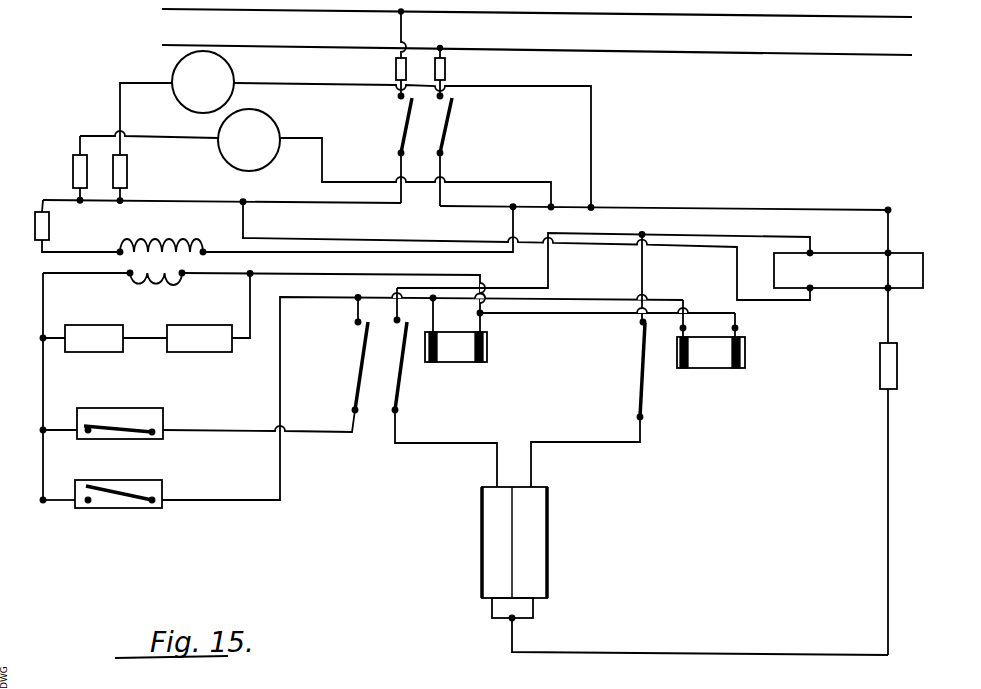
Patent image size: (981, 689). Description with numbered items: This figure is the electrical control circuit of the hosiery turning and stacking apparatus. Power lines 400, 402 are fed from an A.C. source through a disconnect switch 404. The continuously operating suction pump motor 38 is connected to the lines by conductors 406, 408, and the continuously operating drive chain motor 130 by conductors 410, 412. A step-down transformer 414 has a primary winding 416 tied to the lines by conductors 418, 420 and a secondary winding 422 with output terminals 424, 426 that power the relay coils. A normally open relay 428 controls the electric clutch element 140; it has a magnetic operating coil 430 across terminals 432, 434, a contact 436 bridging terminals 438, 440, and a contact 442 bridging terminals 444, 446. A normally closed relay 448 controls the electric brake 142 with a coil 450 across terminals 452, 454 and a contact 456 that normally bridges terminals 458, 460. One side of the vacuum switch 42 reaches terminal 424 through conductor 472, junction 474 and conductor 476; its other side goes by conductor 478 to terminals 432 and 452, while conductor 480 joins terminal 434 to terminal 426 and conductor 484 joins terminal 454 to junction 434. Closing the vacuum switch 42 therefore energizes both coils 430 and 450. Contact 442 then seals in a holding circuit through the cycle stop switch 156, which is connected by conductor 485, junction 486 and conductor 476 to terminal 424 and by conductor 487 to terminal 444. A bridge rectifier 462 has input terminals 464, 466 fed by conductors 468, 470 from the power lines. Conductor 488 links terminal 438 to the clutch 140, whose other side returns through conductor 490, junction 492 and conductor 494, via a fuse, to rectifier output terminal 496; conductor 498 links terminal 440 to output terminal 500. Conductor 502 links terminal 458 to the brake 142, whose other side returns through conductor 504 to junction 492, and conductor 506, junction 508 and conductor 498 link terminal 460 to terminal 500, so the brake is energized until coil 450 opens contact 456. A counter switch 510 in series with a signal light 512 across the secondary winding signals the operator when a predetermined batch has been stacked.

The continuously operating motor 38 is at (232, 62).
The continuously operating motor 130 is at (279, 127).
The conductor 406 is at (118, 112).
The conductor 410 is at (80, 142).
The conductor 412 is at (321, 176).
The disconnect switch 404 is at (448, 139).
The conductor 408 is at (592, 140).
The power line 400 is at (295, 202).
The power line 402 is at (706, 209).
The conductor 418 is at (93, 232).
The primary winding 416 is at (147, 245).
The step-down transformer 414 is at (190, 222).
The conductor 420 is at (235, 236).
The secondary winding 422 is at (140, 290).
The output terminal 424 is at (128, 277).
The output terminal 426 is at (184, 278).
The conductor 480 is at (452, 276).
The signal light 512 is at (116, 318).
The counter switch 510 is at (221, 318).
The conductor 476 is at (42, 410).
The junction 486 is at (41, 431).
The conductor 485 is at (58, 432).
The cycle stop switch 156 is at (153, 434).
The conductor 487 is at (209, 433).
The junction 474 is at (42, 500).
The conductor 472 is at (57, 501).
The vacuum switch 42 is at (105, 508).
The conductor 478 is at (210, 501).
The terminal 446 is at (351, 321).
The normally open contact 442 is at (352, 368).
The terminal 444 is at (353, 412).
The terminal 440 is at (392, 323).
The normally open contact 436 is at (396, 398).
The terminal 438 is at (399, 412).
The conductor 488 is at (405, 444).
The terminal 432 is at (436, 299).
The terminal 434 is at (482, 318).
The magnetic operating coil 430 is at (472, 356).
The normally open relay 428 is at (472, 367).
The conductor 498 is at (548, 271).
The junction 508 is at (649, 234).
The output terminal 500 is at (811, 246).
The conductor 470 is at (892, 228).
The input terminal 466 is at (913, 253).
The conductor 506 is at (645, 288).
The conductor 468 is at (737, 299).
The input terminal 464 is at (810, 291).
The bridge rectifier 462 is at (868, 294).
The output terminal 496 is at (894, 302).
The terminal 460 is at (638, 328).
The normally closed contact 456 is at (636, 385).
The terminal 458 is at (636, 418).
The conductor 502 is at (575, 444).
The conductor 484 is at (712, 315).
The terminal 454 is at (735, 328).
The terminal 452 is at (682, 340).
The magnetic operating coil 450 is at (725, 362).
The normally closed relay 448 is at (689, 372).
The electric clutch element 140 is at (482, 553).
The electric brake 142 is at (545, 553).
The conductor 490 is at (492, 612).
The conductor 504 is at (533, 612).
The junction 492 is at (510, 620).
The conductor 494 is at (672, 653).